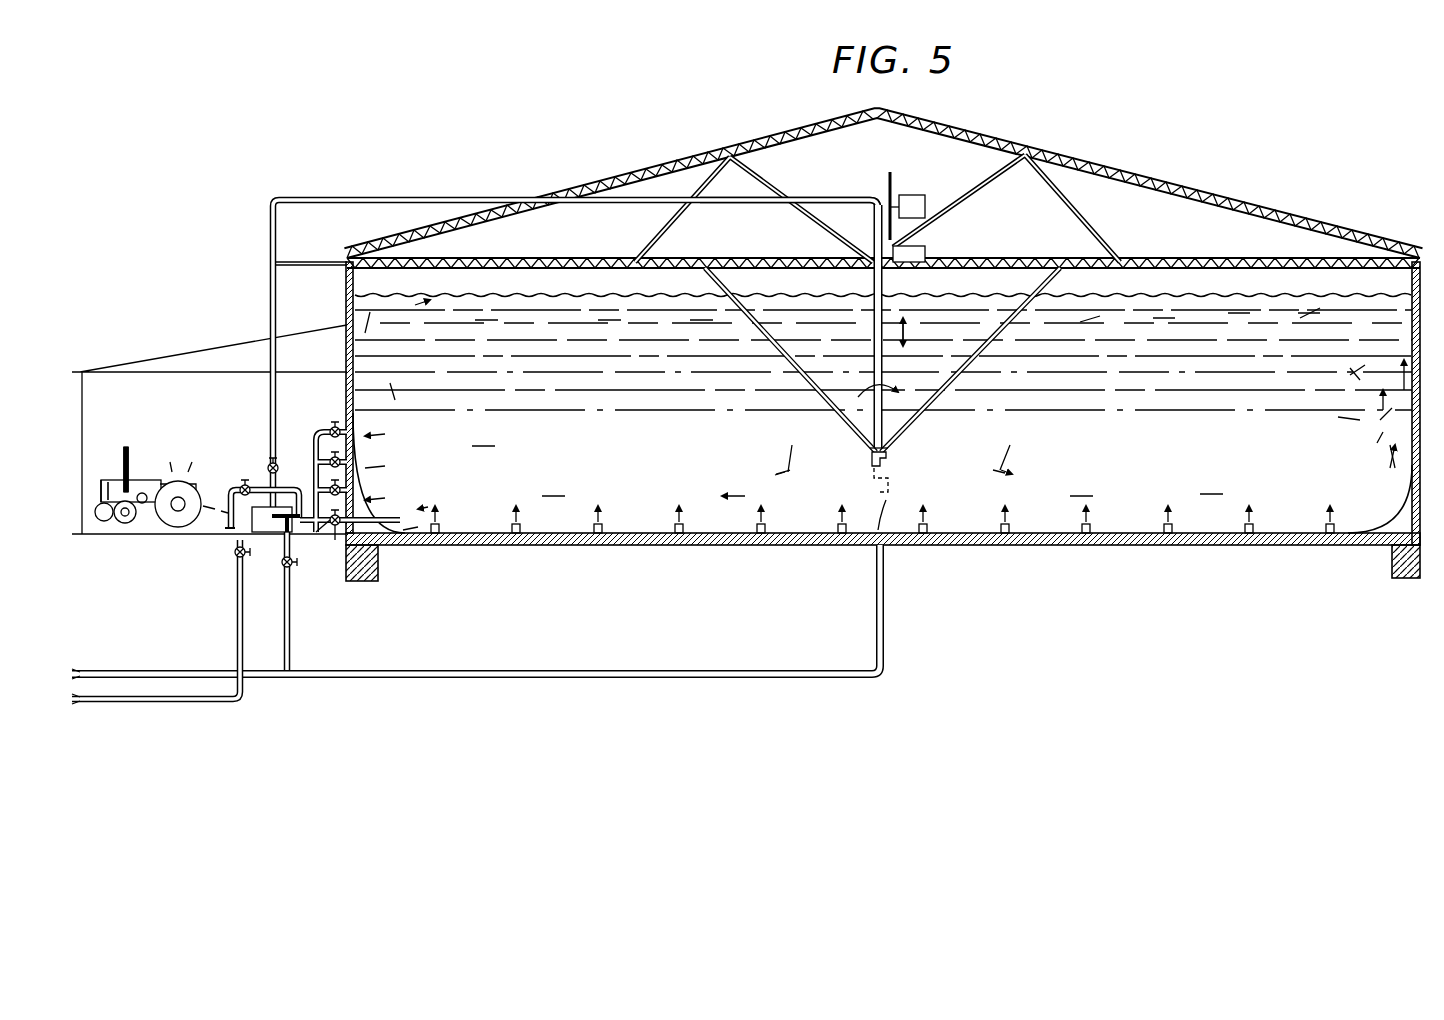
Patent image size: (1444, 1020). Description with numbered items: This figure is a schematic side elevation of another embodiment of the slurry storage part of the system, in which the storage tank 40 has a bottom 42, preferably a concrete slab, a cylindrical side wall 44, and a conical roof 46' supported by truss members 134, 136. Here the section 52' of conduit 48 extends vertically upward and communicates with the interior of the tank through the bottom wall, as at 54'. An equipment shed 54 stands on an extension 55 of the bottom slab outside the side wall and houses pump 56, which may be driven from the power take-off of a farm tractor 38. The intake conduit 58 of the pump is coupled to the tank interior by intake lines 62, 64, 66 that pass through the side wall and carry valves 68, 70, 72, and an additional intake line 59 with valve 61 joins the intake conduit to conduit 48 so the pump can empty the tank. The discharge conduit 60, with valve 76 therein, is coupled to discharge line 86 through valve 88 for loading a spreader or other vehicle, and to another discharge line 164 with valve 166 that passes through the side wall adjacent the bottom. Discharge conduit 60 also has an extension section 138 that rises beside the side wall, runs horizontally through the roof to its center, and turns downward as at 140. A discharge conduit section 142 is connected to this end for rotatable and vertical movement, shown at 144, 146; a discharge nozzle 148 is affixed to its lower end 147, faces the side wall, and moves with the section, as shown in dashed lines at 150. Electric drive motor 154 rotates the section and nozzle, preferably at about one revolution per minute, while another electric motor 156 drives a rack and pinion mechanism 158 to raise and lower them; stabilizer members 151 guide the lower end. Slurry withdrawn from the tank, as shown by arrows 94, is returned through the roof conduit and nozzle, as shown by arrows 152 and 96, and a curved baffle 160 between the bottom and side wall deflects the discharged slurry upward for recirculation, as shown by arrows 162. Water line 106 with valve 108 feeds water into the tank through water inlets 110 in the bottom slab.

The farm tractor 38 is at (122, 470).
The storage tank 40 is at (1216, 356).
The bottom 42 is at (715, 547).
The side wall 44 is at (1410, 381).
The conical roof 46' is at (883, 183).
The conduit 48 is at (148, 669).
The vertical section of conduit 52' is at (907, 597).
The equipment shed 54 is at (209, 398).
The communication point 54' is at (901, 509).
The extension of bottom slab 55 is at (150, 537).
The pump 56 is at (292, 505).
The intake conduit 58 is at (312, 455).
The additional intake line 59 is at (291, 616).
The discharge conduit 60 is at (262, 505).
The valve 61 is at (284, 567).
The intake line 62 is at (355, 437).
The intake line 64 is at (358, 466).
The intake line 66 is at (355, 498).
The valve 68 is at (330, 426).
The valve 70 is at (360, 450).
The valve 72 is at (345, 490).
The valve 76 is at (268, 465).
The discharge line 86 is at (225, 530).
The valve 88 is at (240, 485).
The arrows 94 is at (388, 486).
The arrows 96 is at (400, 530).
The water line 106 is at (236, 627).
The valve 108 is at (236, 556).
The water inlets 110 is at (672, 530).
The truss member 134 is at (985, 200).
The truss member 136 is at (1150, 260).
The extension section 138 is at (462, 198).
The end of conduit section 140 is at (868, 206).
The discharge conduit section 142 is at (872, 349).
The rotatable movement 144 is at (895, 392).
The vertical movement 146 is at (908, 332).
The lower end 147 is at (875, 434).
The discharge nozzle 148 is at (890, 460).
The dashed-line nozzle position 150 is at (890, 480).
The stabilizer members 151 is at (752, 343).
The arrows 152 is at (902, 450).
The electric drive motor 154 is at (928, 252).
The electric motor 156 is at (913, 195).
The rack and pinion mechanism 158 is at (896, 185).
The curved baffle 160 is at (1392, 516).
The arrows 162 is at (1310, 312).
The discharge line 164 is at (318, 535).
The valve 166 is at (335, 542).